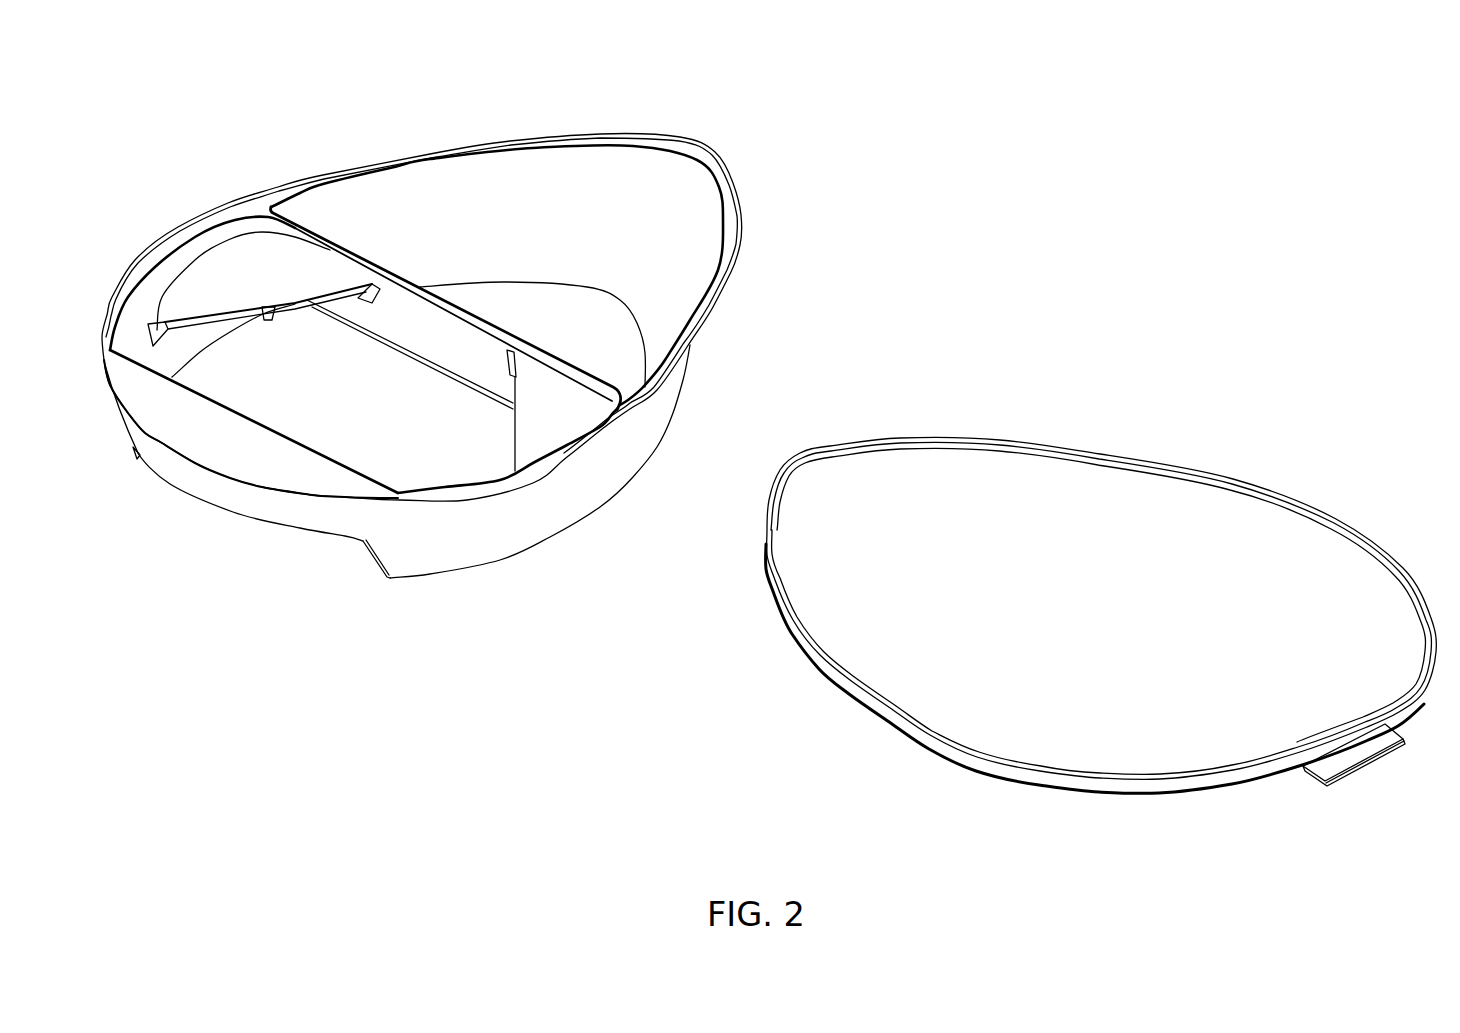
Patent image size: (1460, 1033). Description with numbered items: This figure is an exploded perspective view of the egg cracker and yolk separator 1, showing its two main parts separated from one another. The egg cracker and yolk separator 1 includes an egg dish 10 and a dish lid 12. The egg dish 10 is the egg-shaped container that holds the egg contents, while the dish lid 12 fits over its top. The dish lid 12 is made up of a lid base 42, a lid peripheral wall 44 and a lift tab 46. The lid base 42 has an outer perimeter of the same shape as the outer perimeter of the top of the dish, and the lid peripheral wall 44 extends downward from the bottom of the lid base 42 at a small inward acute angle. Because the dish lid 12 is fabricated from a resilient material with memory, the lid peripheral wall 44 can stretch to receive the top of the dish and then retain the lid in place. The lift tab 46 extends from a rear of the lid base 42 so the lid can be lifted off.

The egg cracker and yolk separator 1 is at (1200, 140).
The egg dish 10 is at (243, 108).
The dish lid 12 is at (1000, 416).
The lid base 42 is at (1337, 587).
The lid peripheral wall 44 is at (1170, 790).
The lift tab 46 is at (1345, 755).